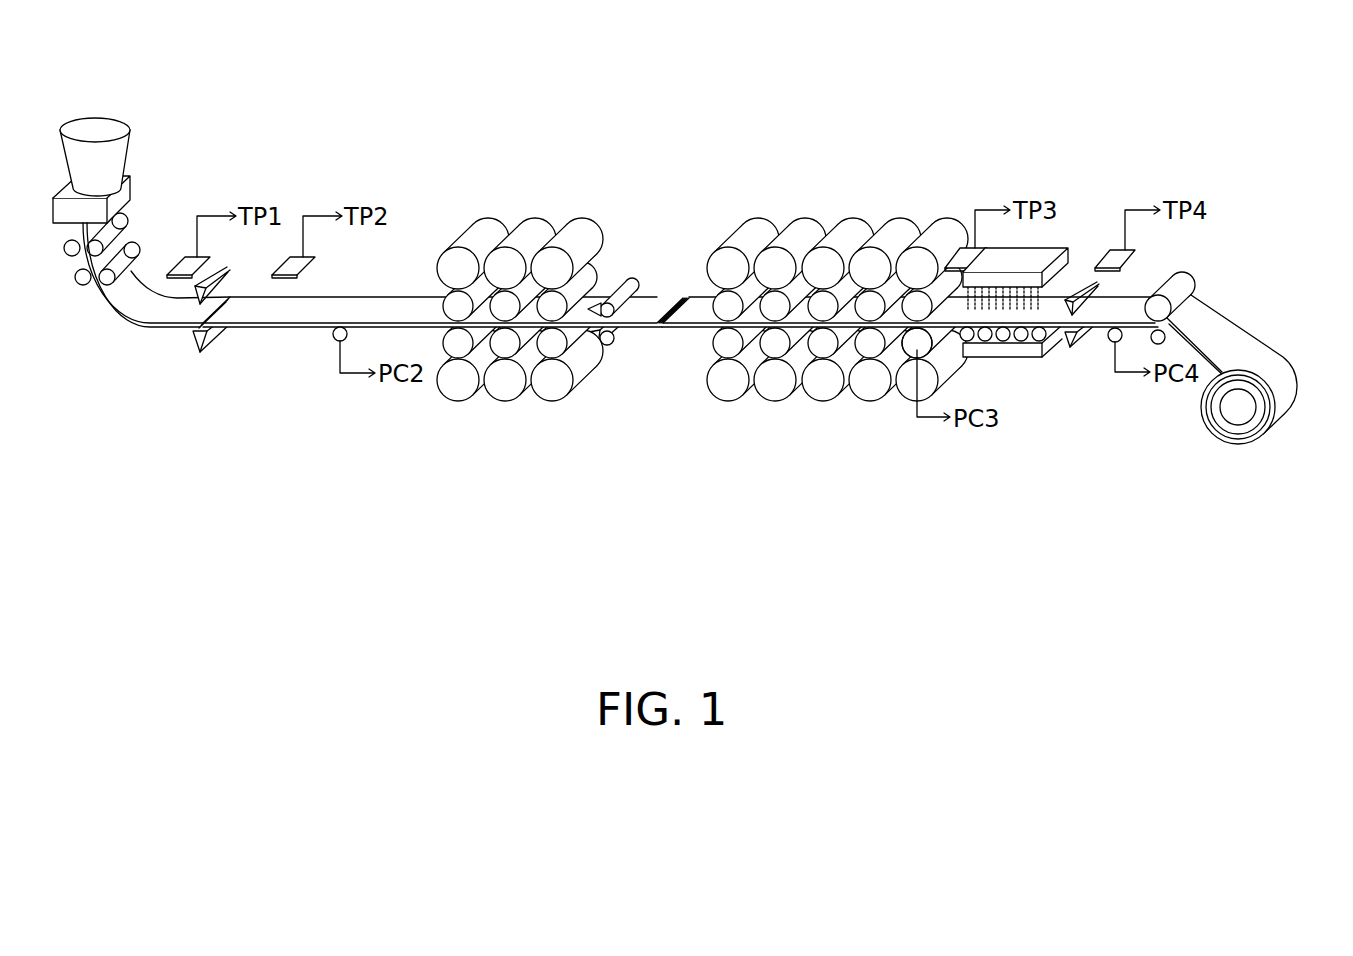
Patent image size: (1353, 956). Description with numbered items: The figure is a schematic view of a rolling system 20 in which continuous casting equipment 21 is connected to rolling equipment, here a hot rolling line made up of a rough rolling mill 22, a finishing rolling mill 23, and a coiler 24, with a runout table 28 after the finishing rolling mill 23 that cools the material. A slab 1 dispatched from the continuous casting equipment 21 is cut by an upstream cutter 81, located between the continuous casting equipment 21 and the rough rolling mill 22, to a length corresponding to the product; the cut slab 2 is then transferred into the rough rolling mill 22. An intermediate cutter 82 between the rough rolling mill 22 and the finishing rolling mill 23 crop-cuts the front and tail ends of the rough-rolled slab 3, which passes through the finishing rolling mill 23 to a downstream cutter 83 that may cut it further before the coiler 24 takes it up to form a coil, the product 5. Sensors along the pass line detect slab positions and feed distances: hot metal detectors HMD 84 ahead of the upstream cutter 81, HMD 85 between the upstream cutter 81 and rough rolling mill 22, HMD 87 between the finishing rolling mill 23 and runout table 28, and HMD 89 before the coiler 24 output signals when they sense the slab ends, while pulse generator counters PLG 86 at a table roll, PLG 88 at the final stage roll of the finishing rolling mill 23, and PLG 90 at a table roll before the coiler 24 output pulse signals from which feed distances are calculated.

The slab 1 is at (157, 303).
The cut slab 2 is at (397, 305).
The rough-rolled slab 3 is at (692, 307).
The product 5 is at (1282, 378).
The rolling system 20 is at (1190, 94).
The continuous casting equipment 21 is at (105, 112).
The rough rolling mill 22 is at (520, 350).
The finishing rolling mill 23 is at (837, 350).
The coiler 24 is at (1240, 410).
The runout table 28 is at (1045, 258).
The upstream cutter 81 is at (198, 350).
The intermediate cutter 82 is at (590, 345).
The downstream cutter 83 is at (1070, 345).
The HMD 84 is at (185, 253).
The HMD 85 is at (288, 253).
The PLG 86 is at (337, 342).
The HMD 87 is at (967, 255).
The PLG 88 is at (908, 342).
The HMD 89 is at (1115, 252).
The PLG 90 is at (1113, 343).